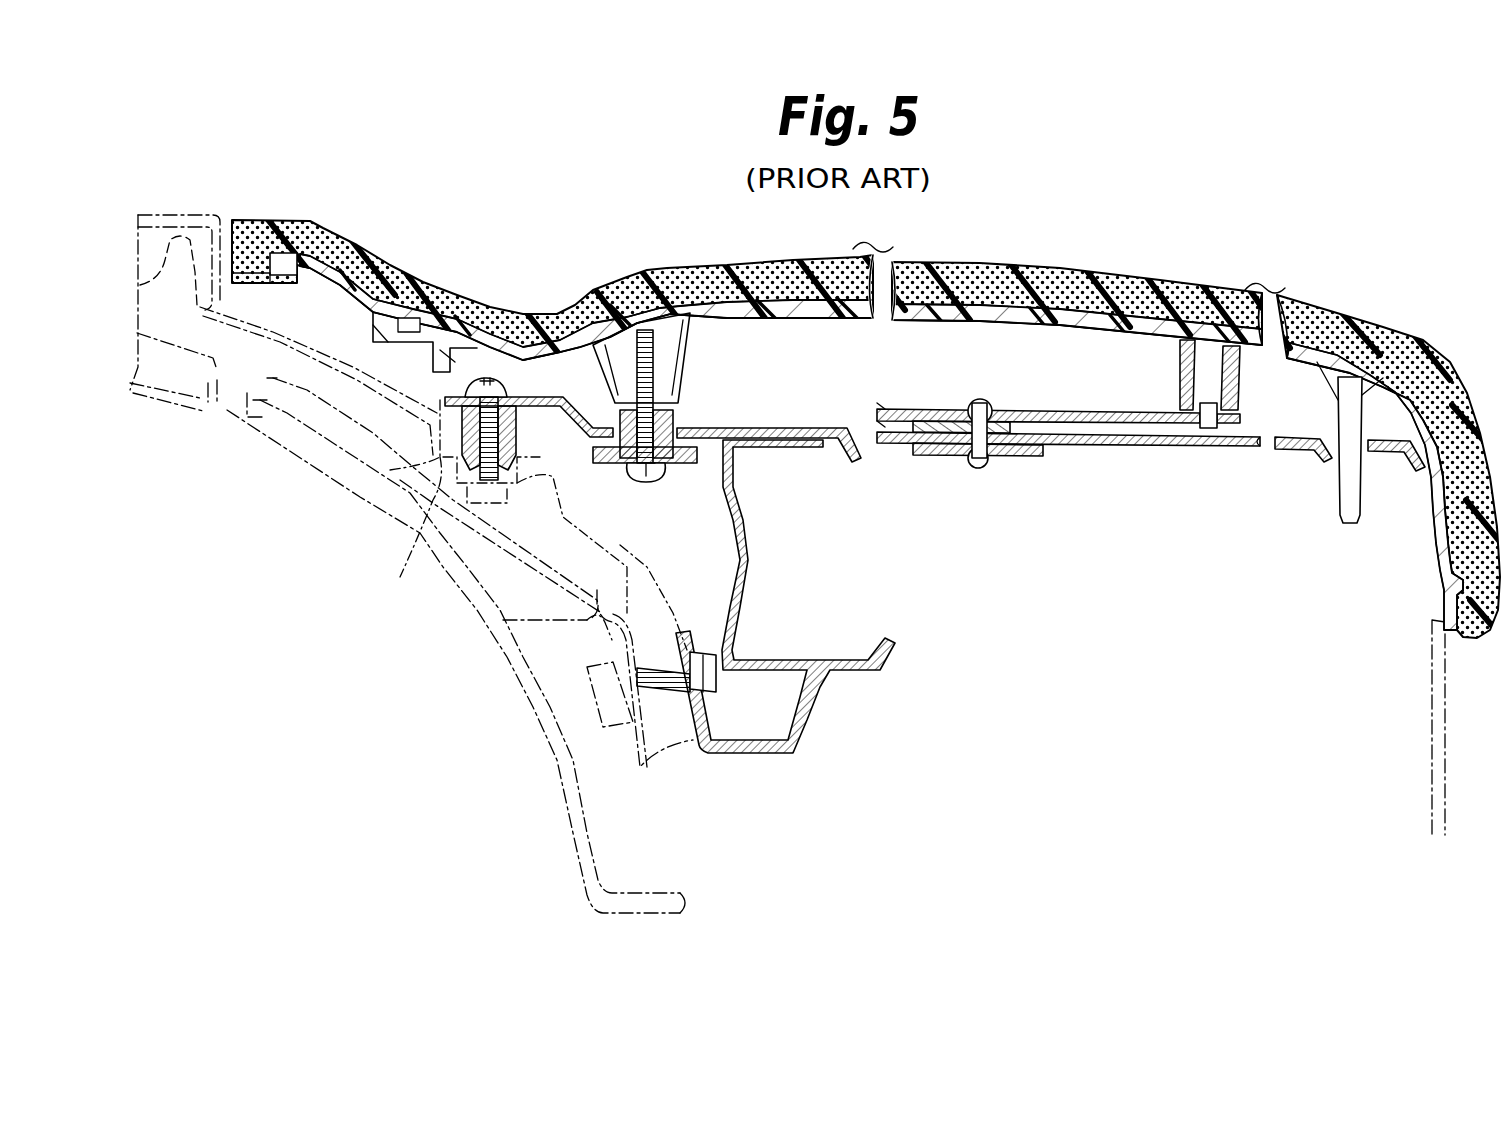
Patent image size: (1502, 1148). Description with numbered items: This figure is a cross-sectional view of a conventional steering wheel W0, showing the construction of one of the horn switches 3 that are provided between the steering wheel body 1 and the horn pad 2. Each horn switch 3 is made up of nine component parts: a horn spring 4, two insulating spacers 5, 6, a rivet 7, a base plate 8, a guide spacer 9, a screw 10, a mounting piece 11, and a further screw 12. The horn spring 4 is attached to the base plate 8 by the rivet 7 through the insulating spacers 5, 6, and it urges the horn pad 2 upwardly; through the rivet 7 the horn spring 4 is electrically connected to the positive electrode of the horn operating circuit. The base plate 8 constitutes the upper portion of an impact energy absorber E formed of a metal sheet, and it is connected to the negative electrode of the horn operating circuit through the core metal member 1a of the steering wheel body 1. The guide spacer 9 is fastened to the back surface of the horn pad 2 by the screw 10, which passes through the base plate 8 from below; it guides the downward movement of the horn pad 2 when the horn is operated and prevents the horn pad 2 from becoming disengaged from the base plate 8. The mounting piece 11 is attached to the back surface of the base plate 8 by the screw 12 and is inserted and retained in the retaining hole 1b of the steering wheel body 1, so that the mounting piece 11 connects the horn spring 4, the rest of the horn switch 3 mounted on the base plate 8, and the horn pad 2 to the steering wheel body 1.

The steering wheel body 1 is at (548, 834).
The core metal member 1a is at (595, 626).
The retaining hole 1b is at (440, 533).
The horn pad 2 is at (1050, 260).
The horn switch 3 is at (978, 433).
The horn spring 4 is at (1087, 408).
The insulating spacer 5 is at (1010, 456).
The insulating spacer 6 is at (1038, 458).
The rivet 7 is at (973, 466).
The base plate 8 is at (797, 441).
The guide spacer 9 is at (688, 465).
The screw 10 is at (648, 480).
The mounting piece 11 is at (440, 455).
The screw 12 is at (491, 380).
The conventional steering wheel W0 is at (1418, 252).
The impact energy absorber E is at (902, 680).